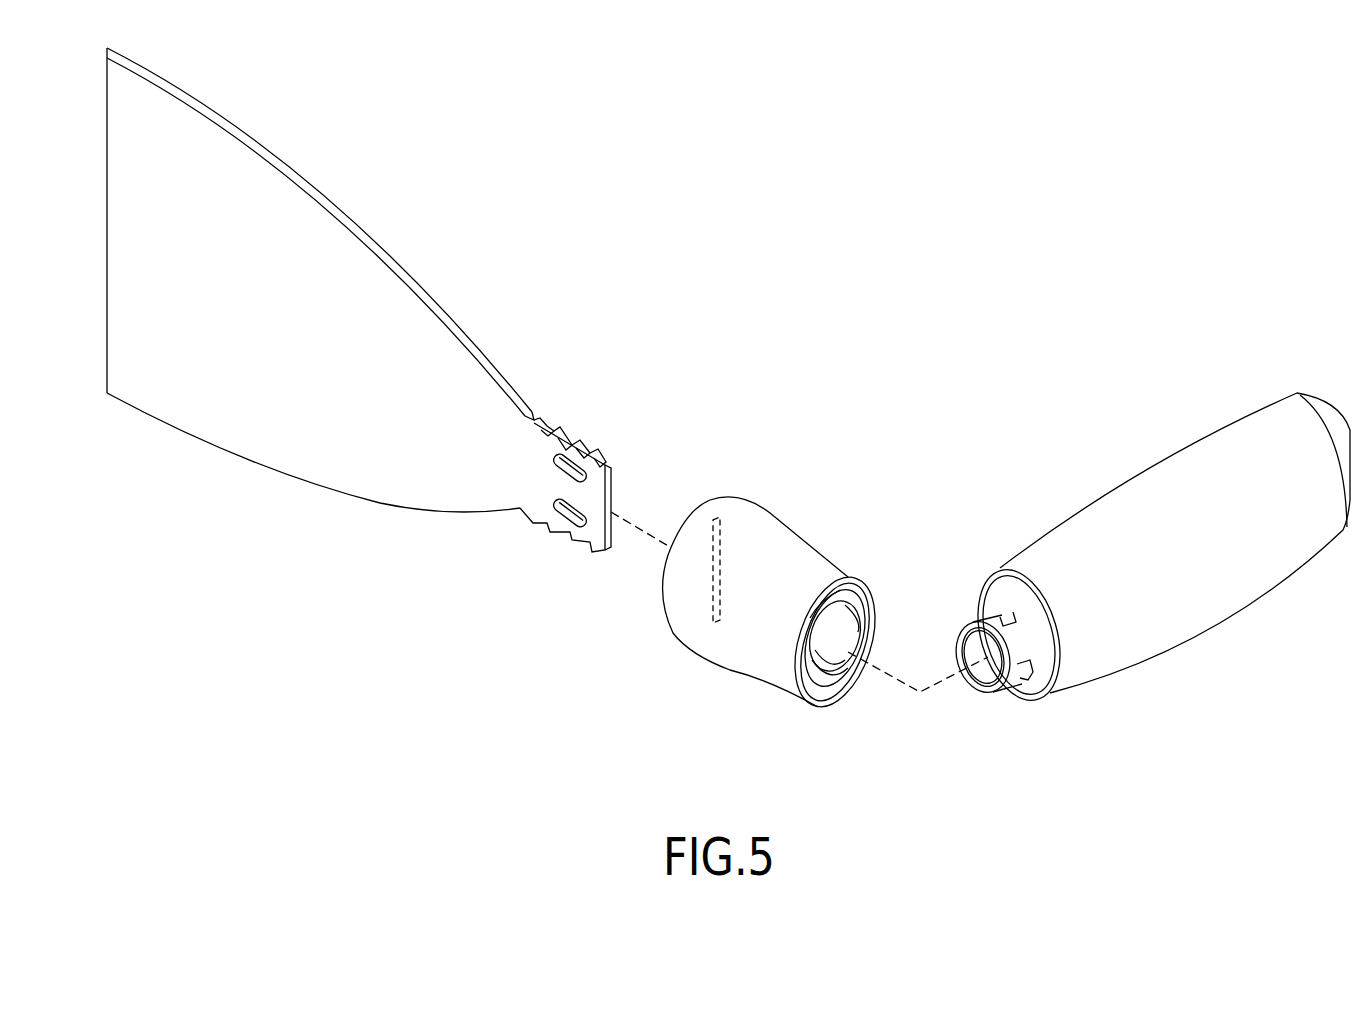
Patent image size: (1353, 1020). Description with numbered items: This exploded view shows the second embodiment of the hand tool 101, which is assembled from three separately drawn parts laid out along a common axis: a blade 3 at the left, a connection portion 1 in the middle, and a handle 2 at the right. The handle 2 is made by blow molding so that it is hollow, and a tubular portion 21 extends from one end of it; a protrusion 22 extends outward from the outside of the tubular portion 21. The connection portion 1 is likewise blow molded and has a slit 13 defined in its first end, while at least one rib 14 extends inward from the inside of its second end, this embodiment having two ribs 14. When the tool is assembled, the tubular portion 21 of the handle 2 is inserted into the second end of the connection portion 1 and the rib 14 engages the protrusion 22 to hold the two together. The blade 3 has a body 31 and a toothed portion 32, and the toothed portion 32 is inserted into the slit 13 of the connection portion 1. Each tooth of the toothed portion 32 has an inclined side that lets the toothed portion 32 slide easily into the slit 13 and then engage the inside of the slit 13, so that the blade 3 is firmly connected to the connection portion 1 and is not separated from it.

The hand tool 101 is at (730, 312).
The connection portion 1 is at (803, 527).
The slit 13 is at (710, 537).
The rib 14 is at (833, 672).
The handle 2 is at (1126, 468).
The tubular portion 21 is at (1030, 640).
The protrusion 22 is at (1027, 680).
The blade 3 is at (338, 196).
The body 31 is at (300, 466).
The toothed portion 32 is at (548, 420).